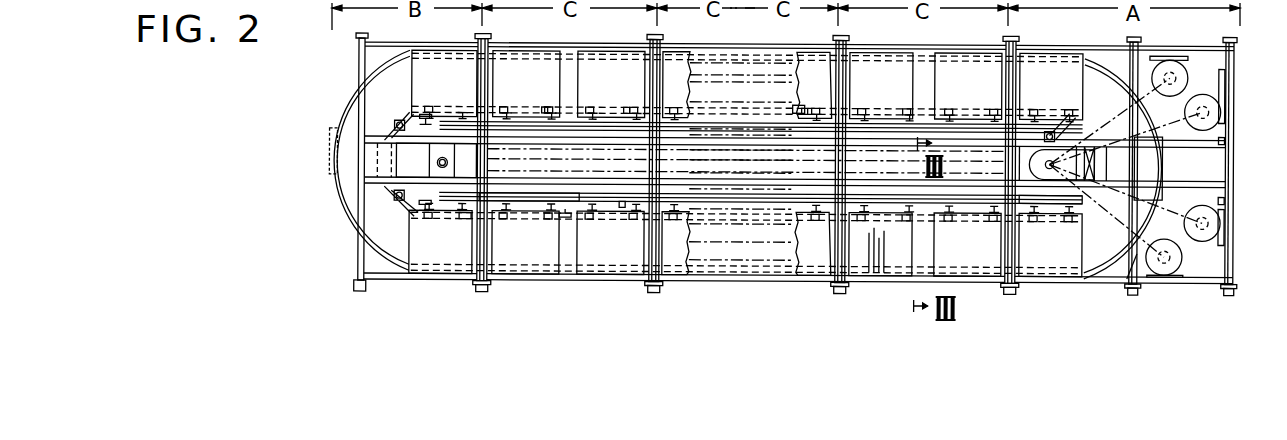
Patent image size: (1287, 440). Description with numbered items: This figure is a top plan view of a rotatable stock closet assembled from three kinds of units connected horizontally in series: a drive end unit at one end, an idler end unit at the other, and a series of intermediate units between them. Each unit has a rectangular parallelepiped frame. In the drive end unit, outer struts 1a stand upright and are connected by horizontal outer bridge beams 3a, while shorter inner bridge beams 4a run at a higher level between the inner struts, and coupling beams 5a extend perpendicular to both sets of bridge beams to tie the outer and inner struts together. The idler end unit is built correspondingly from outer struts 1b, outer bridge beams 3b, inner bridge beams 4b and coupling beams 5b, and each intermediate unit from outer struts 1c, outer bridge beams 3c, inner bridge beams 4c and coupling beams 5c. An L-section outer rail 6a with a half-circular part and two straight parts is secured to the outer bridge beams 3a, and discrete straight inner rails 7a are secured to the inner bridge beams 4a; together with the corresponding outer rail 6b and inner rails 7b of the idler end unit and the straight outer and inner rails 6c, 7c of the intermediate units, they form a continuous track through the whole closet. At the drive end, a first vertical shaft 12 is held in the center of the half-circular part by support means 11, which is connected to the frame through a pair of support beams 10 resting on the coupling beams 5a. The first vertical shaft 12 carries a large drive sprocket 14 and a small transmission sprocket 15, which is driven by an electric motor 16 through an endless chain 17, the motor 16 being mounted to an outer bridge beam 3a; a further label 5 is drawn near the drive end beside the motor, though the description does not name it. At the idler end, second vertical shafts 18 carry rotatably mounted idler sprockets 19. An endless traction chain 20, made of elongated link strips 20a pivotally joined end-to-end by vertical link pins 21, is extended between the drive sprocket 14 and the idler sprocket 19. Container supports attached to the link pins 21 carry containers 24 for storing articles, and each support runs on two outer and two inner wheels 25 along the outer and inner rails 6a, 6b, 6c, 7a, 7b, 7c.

The outer struts 1a is at (1018, 38).
The outer struts 1b is at (368, 36).
The outer struts 1c is at (486, 36).
The outer bridge beams 3a is at (1056, 45).
The outer bridge beams 3b is at (376, 48).
The outer bridge beams 3c is at (832, 45).
The inner bridge beams 4a is at (1063, 203).
The inner bridge beams 4b is at (446, 233).
The inner bridge beams 4c is at (573, 129).
The drive unit 5 is at (1130, 253).
The coupling beams 5a is at (1016, 78).
The coupling beams 5b is at (358, 78).
The coupling beams 5c is at (547, 81).
The outer rail 6a is at (1092, 55).
The outer rail 6b is at (333, 205).
The outer rails 6c is at (577, 53).
The inner rails 7a is at (1060, 114).
The inner rails 7b is at (410, 118).
The inner rails 7c is at (552, 130).
The support beams 10 is at (1163, 153).
The support means 11 is at (1020, 150).
The first vertical shaft 12 is at (1020, 175).
The drive sprocket 14 is at (980, 163).
The transmission sprocket 15 is at (1035, 222).
The electric motor 16 is at (1188, 74).
The endless chain 17 is at (1202, 128).
The second vertical shafts 18 is at (449, 164).
The idler sprockets 19 is at (493, 148).
The traction chain 20 is at (797, 104).
The link strips 20a is at (410, 195).
The link pins 21 is at (405, 118).
The containers 24 is at (334, 157).
The wheels 25 is at (332, 140).